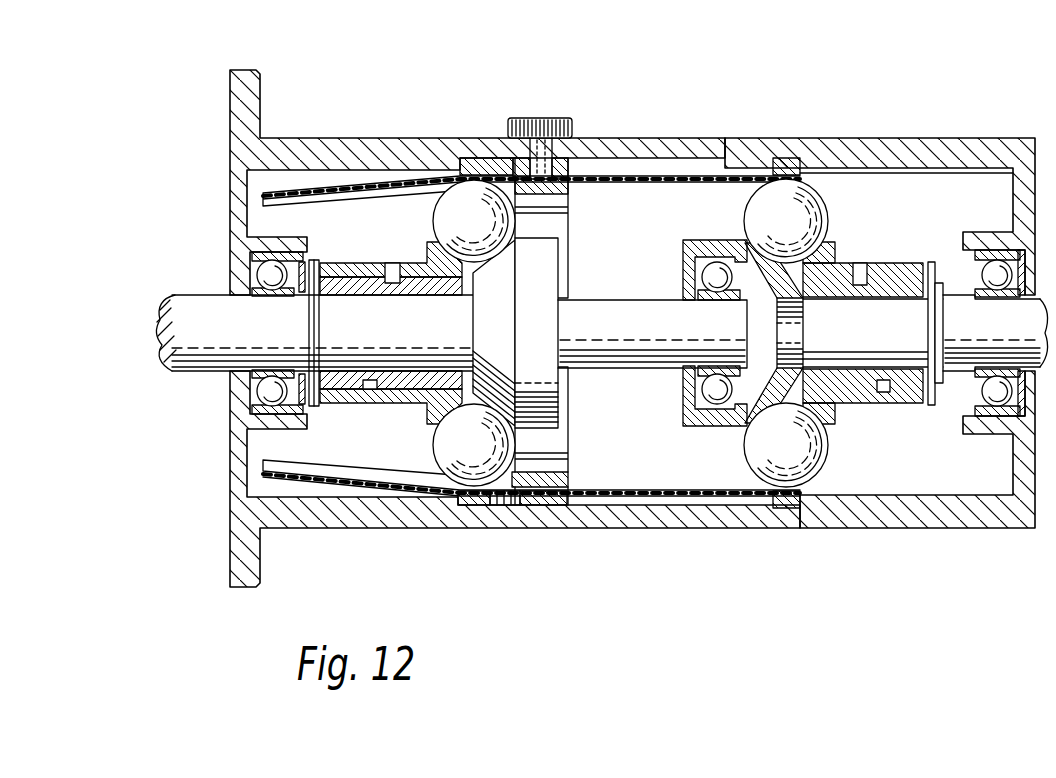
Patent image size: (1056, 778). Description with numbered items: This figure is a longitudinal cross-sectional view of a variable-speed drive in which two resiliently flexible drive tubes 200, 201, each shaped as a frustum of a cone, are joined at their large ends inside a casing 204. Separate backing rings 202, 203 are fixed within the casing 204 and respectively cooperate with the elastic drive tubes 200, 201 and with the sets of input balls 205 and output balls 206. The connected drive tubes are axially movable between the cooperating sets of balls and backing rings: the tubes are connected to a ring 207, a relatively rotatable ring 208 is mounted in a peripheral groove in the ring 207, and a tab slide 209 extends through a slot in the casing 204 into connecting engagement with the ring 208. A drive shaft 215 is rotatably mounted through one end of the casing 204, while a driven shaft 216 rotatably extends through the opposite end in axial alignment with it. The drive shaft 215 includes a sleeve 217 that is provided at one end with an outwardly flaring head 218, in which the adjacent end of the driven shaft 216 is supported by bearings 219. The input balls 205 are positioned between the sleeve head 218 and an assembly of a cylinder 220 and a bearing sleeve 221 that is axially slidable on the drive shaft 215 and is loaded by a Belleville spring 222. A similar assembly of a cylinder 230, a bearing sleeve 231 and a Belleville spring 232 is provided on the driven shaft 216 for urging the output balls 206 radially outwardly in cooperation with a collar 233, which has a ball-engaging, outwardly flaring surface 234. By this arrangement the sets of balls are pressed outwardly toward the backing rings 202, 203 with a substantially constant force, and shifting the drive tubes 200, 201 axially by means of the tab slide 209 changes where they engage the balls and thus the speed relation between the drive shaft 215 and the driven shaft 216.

The resiliently flexible drive tube 200 is at (697, 506).
The resiliently flexible drive tube 201 is at (366, 497).
The backing ring 202 is at (781, 158).
The backing ring 203 is at (481, 139).
The casing 204 is at (332, 140).
The input balls 205 is at (812, 224).
The output balls 206 is at (452, 222).
The ring 207 is at (554, 478).
The relatively rotatable ring 208 is at (560, 160).
The tab slide 209 is at (543, 118).
The drive shaft 215 is at (1041, 321).
The driven shaft 216 is at (196, 283).
The sleeve 217 is at (862, 362).
The outwardly flaring head 218 is at (703, 225).
The bearings 219 is at (697, 391).
The cylinder 220 is at (873, 263).
The bearing sleeve 221 is at (905, 272).
The Belleville spring 222 is at (934, 405).
The cylinder 230 is at (356, 256).
The bearing sleeve 231 is at (411, 267).
The Belleville spring 232 is at (313, 406).
The collar 233 is at (560, 276).
The ball-engaging, outwardly flaring surface 234 is at (498, 308).